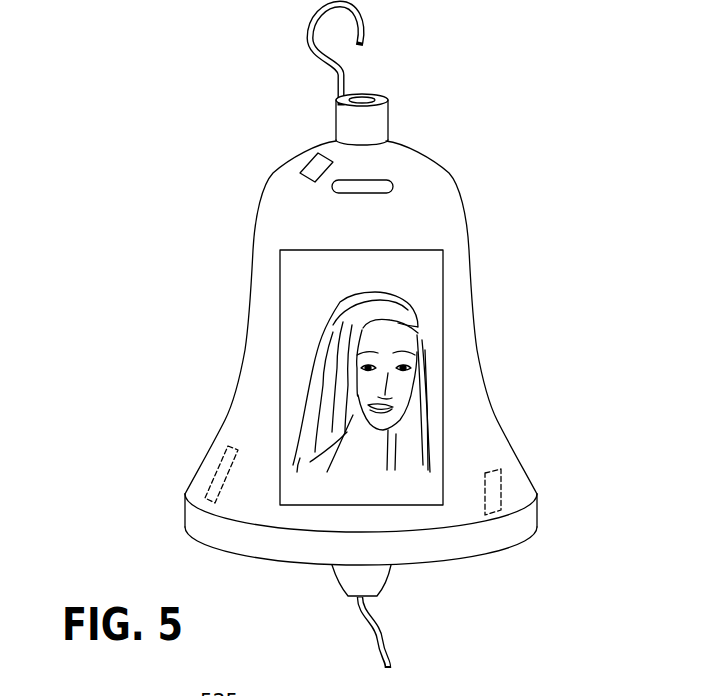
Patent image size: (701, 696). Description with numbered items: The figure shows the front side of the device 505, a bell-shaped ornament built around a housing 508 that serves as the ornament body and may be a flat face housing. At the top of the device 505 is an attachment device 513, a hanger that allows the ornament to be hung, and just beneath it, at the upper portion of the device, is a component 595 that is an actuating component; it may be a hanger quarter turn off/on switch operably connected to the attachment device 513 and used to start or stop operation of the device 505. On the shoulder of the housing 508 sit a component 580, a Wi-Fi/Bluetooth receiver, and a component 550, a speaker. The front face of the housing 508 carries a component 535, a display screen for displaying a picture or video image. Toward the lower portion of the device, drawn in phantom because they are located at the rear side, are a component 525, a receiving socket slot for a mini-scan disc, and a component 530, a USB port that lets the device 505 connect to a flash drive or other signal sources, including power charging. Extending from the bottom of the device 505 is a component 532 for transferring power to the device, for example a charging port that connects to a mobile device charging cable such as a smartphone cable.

The device 505 is at (235, 73).
The attachment device 513 is at (363, 30).
The actuating component 595 is at (387, 100).
The component 580 is at (303, 163).
The component 550 is at (380, 181).
The component 535 is at (302, 300).
The housing 508 is at (477, 333).
The component 525 is at (215, 468).
The component 530 is at (500, 482).
The component 532 is at (384, 631).